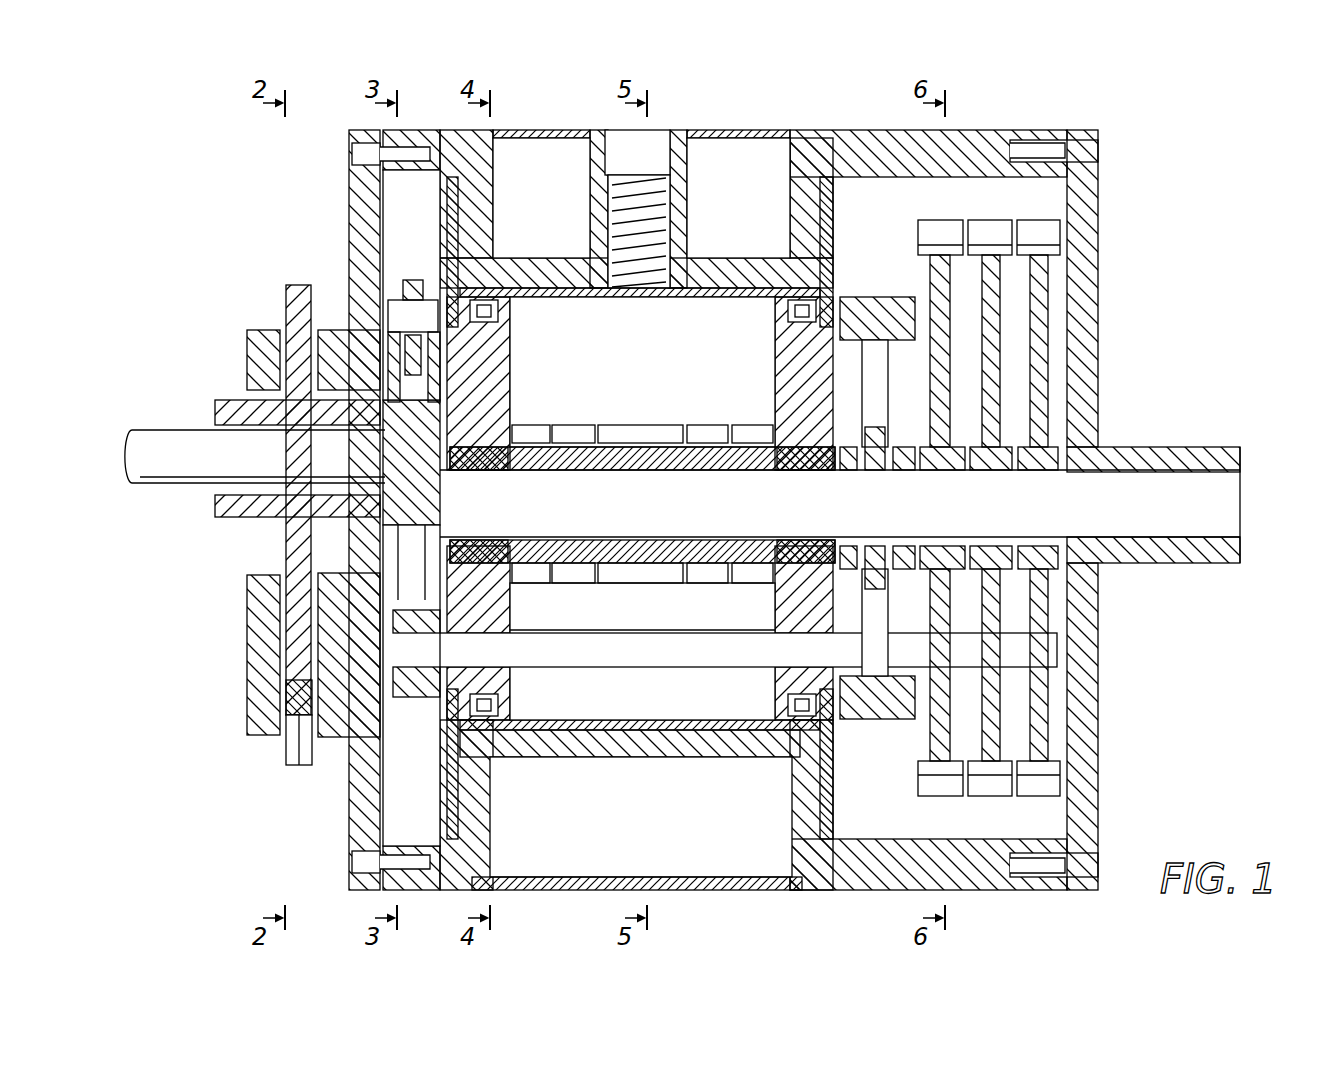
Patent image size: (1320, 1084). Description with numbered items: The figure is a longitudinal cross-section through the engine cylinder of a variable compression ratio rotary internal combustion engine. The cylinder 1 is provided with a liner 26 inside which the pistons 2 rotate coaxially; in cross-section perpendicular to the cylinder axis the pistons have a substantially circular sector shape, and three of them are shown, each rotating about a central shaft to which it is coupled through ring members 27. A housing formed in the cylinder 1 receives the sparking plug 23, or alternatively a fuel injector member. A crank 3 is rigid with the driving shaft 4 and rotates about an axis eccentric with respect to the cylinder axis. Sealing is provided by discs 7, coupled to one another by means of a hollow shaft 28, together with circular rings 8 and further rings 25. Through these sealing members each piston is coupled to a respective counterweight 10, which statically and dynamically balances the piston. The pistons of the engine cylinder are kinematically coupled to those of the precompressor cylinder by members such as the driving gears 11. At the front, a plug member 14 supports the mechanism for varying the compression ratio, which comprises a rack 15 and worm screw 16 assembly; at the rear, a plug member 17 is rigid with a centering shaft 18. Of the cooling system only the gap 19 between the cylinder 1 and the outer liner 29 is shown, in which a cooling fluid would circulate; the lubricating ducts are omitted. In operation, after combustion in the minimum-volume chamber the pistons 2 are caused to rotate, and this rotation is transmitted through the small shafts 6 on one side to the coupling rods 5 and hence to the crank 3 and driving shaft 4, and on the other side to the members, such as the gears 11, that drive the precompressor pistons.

The cylinder 1 is at (970, 138).
The pistons 2 is at (583, 700).
The crank 3 is at (452, 287).
The driving shaft 4 is at (185, 443).
The coupling rods 5 is at (410, 283).
The small shafts 6 is at (700, 655).
The discs 7 is at (478, 380).
The circular rings 8 is at (760, 252).
The counterweight 10 is at (863, 705).
The driving gears 11 is at (1045, 780).
The front plug member 14 is at (367, 210).
The rack 15 is at (292, 625).
The worm screw 16 is at (290, 705).
The rear plug member 17 is at (1085, 795).
The centering shaft 18 is at (1150, 522).
The gap 19 is at (748, 862).
The sparking plug 23 is at (650, 162).
The further rings 25 is at (833, 264).
The liner 26 is at (687, 298).
The ring members 27 is at (558, 430).
The hollow shaft 28 is at (660, 452).
The outer liner 29 is at (540, 880).